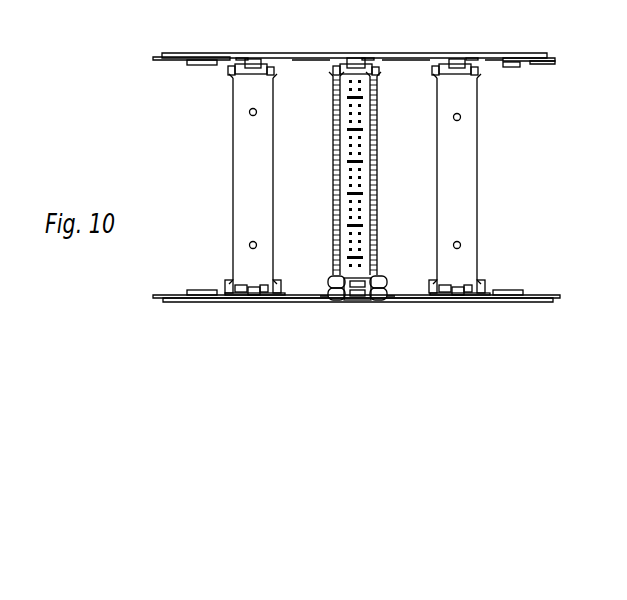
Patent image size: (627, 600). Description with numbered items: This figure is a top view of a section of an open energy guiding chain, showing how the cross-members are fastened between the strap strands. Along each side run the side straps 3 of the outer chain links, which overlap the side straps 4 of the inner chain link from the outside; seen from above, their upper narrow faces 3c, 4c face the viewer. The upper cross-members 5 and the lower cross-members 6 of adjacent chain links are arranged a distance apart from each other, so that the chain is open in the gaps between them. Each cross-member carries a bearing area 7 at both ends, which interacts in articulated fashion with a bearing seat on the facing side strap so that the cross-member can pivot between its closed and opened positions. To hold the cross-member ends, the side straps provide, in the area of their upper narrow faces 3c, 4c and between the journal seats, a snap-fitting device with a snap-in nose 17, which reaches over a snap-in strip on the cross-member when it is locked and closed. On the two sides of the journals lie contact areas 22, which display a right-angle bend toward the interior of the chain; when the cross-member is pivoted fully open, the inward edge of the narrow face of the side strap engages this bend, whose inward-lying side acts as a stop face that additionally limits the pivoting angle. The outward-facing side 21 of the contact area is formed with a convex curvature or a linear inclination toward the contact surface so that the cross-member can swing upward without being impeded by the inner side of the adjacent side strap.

The side strap 3 is at (167, 60).
The upper narrow face 3c is at (239, 59).
The side strap 4 is at (180, 292).
The upper narrow face 4c is at (222, 298).
The upper cross-member 5 is at (232, 152).
The lower cross-member 6 is at (331, 180).
The bearing area 7 is at (367, 278).
The snap-in nose 17 is at (253, 72).
The side of contact area 21 is at (255, 152).
The contact area 22 is at (231, 74).